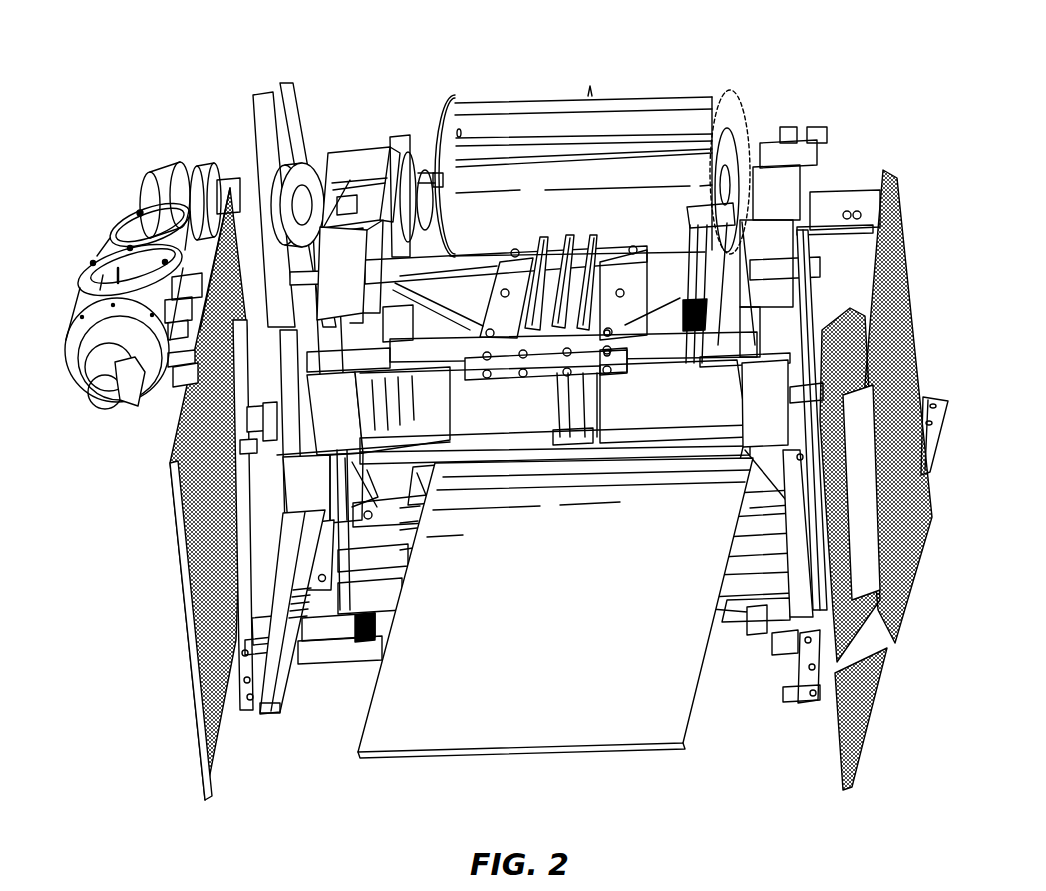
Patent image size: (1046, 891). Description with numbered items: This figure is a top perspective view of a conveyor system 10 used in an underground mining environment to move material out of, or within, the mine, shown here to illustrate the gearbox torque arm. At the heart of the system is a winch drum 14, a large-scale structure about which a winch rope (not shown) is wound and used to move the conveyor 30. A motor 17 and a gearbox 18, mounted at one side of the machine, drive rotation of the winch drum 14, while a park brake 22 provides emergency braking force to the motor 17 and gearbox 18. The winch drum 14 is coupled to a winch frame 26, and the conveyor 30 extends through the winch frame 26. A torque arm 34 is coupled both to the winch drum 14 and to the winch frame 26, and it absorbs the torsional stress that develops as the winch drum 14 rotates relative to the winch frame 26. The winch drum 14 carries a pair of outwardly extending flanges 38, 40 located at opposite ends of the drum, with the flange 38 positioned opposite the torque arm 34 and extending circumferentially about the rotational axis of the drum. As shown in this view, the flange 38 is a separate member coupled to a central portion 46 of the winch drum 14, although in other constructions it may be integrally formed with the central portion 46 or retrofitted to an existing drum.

The conveyor system 10 is at (135, 725).
The winch drum 14 is at (631, 166).
The motor 17 is at (100, 253).
The gearbox 18 is at (167, 160).
The park brake 22 is at (140, 210).
The winch frame 26 is at (277, 688).
The conveyor 30 is at (662, 698).
The torque arm 34 is at (337, 233).
The flange 38 is at (711, 124).
The flange 40 is at (438, 163).
The central portion 46 is at (548, 157).